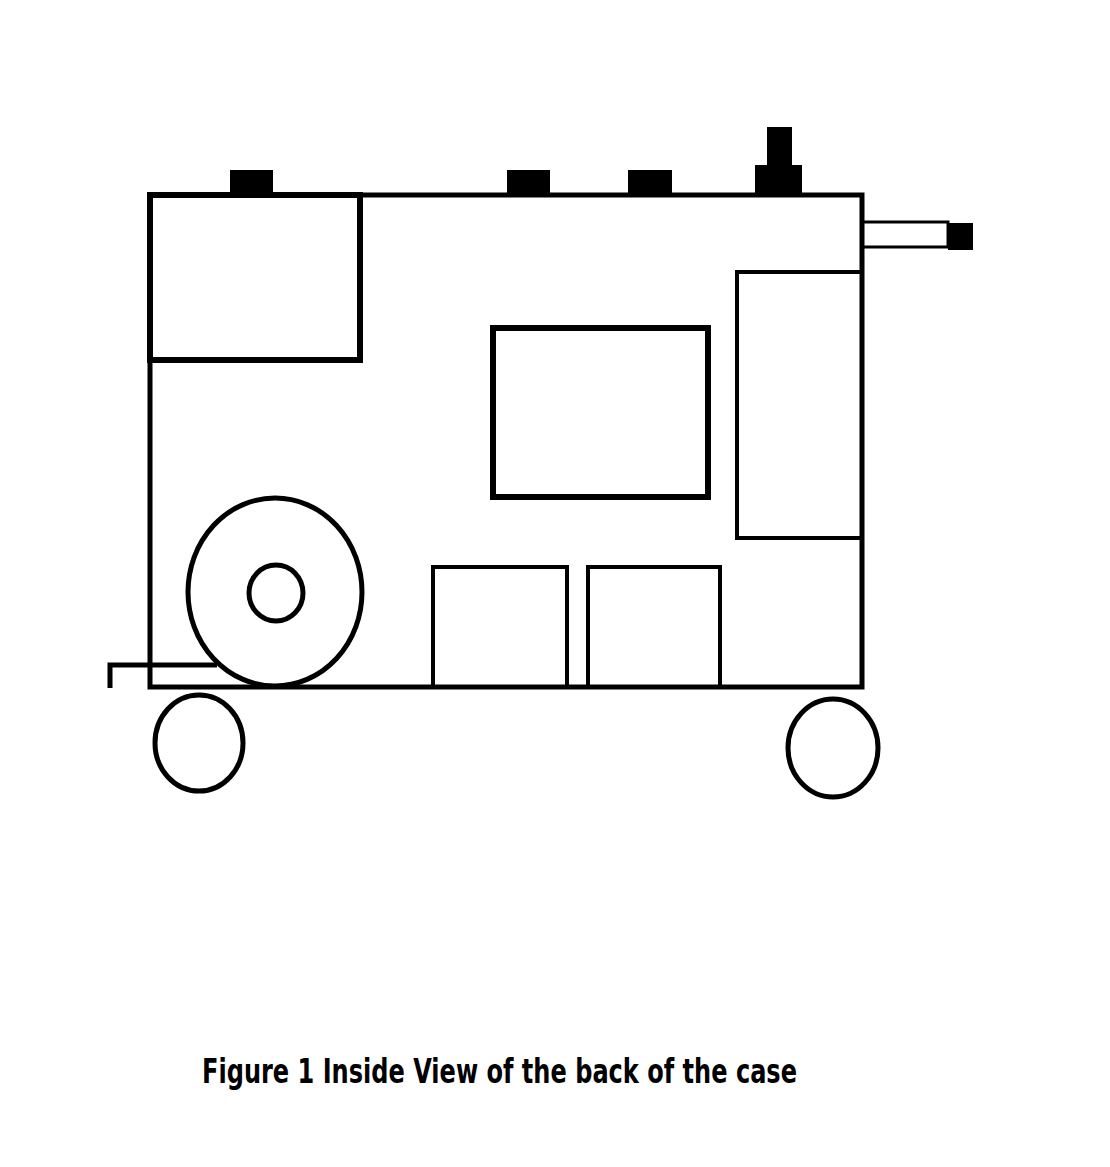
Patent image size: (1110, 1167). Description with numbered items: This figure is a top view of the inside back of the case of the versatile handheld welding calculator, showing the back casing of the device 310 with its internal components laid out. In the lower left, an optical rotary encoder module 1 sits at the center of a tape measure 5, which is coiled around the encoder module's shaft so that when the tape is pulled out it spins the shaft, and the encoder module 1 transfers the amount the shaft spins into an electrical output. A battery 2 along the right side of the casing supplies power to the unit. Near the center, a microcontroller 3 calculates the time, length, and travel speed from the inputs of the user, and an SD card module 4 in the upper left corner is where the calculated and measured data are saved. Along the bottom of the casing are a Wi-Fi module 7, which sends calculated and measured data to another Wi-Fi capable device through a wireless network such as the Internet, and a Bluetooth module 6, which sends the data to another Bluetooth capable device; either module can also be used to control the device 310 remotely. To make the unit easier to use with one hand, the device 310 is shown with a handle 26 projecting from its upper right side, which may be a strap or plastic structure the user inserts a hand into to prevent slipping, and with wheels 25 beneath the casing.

The device 310 is at (837, 170).
The SD card module 4 is at (323, 235).
The microcontroller 3 is at (575, 360).
The battery 2 is at (803, 385).
The handle 26 is at (913, 230).
The tape measure 5 is at (217, 560).
The optical rotary encoder module 1 is at (278, 603).
The Wi-Fi module 7 is at (505, 655).
The Bluetooth module 6 is at (667, 653).
The wheels 25 is at (177, 760).